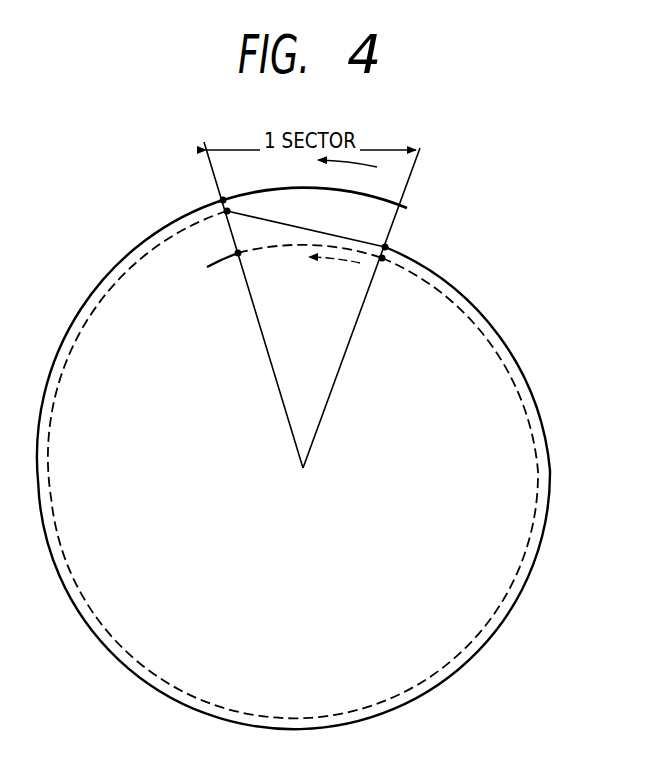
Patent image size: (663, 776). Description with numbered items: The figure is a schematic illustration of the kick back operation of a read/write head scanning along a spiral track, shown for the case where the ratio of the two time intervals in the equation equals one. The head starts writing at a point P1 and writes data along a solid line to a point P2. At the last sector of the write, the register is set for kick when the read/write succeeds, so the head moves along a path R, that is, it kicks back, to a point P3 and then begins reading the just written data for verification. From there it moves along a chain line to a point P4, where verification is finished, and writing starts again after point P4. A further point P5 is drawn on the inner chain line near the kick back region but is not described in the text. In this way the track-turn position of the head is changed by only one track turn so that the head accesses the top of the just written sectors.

The write start point P1 is at (221, 199).
The write end point P2 is at (387, 246).
The kick back arrival point P3 is at (226, 213).
The verification end point P4 is at (382, 261).
The fifth point on inner track arc P5 is at (238, 256).
The kick back path R is at (378, 219).